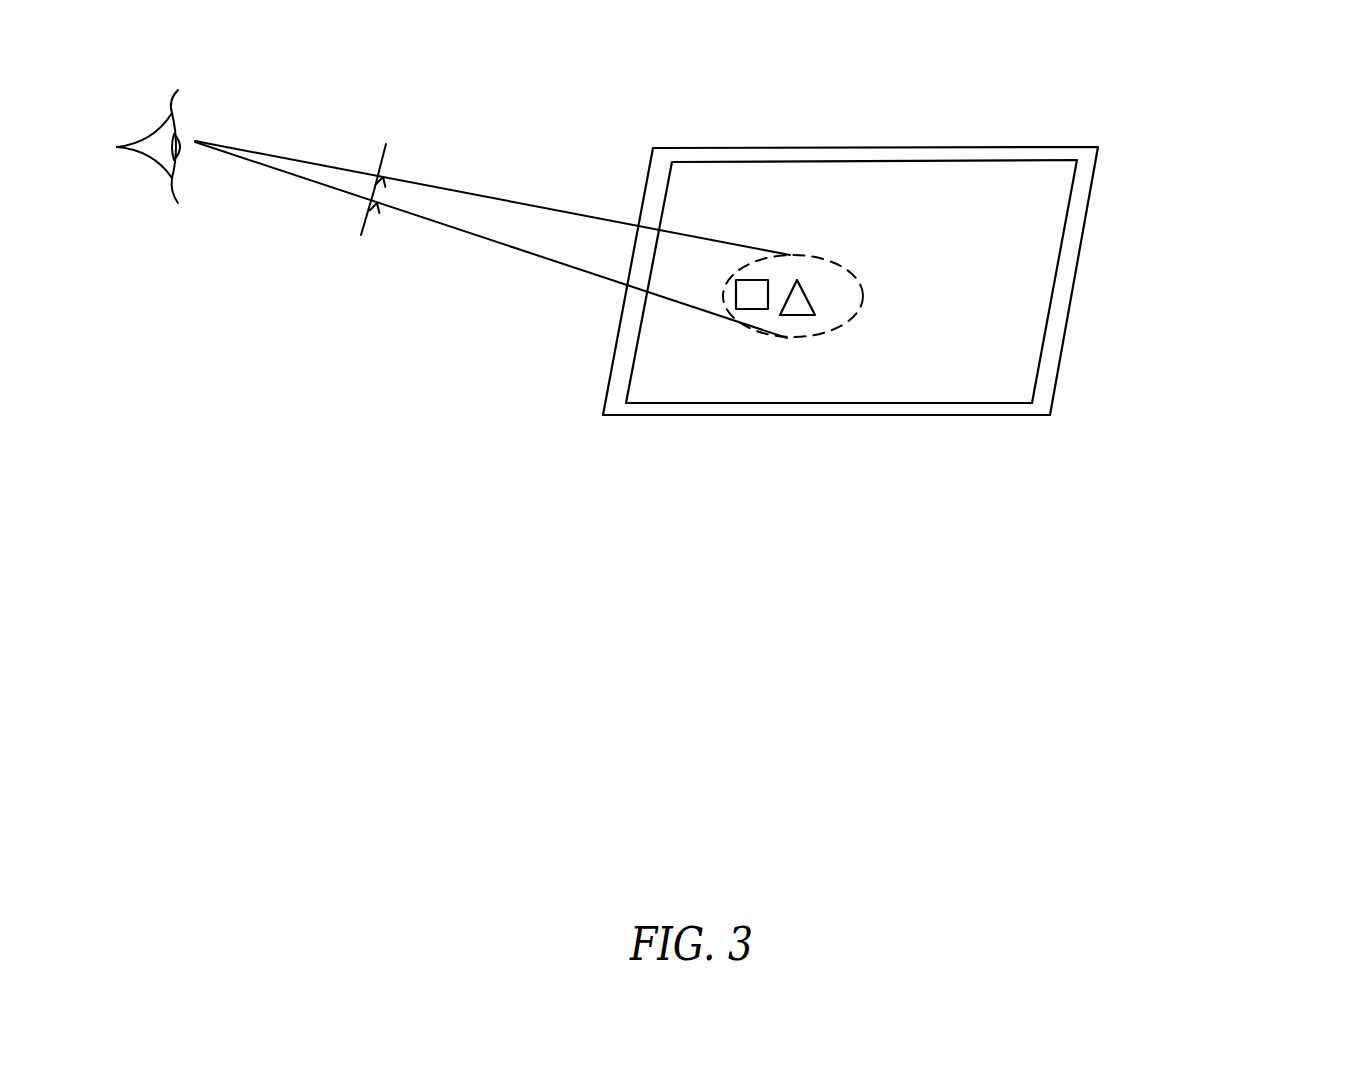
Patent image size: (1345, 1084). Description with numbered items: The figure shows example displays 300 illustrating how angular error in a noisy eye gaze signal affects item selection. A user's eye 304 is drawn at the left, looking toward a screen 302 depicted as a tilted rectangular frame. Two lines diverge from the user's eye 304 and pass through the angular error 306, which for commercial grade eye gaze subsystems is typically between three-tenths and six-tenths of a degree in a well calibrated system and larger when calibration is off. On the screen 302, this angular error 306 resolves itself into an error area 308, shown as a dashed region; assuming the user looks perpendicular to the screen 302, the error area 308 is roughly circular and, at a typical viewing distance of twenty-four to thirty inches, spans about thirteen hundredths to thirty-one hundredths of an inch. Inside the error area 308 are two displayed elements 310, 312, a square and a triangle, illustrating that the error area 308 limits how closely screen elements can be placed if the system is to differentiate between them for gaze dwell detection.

The example displays 300 is at (1290, 80).
The screen 302 is at (861, 249).
The user's eye 304 is at (174, 127).
The angular error 306 is at (404, 155).
The error area 308 is at (804, 260).
The displayed element 310 is at (731, 335).
The displayed element 312 is at (822, 336).